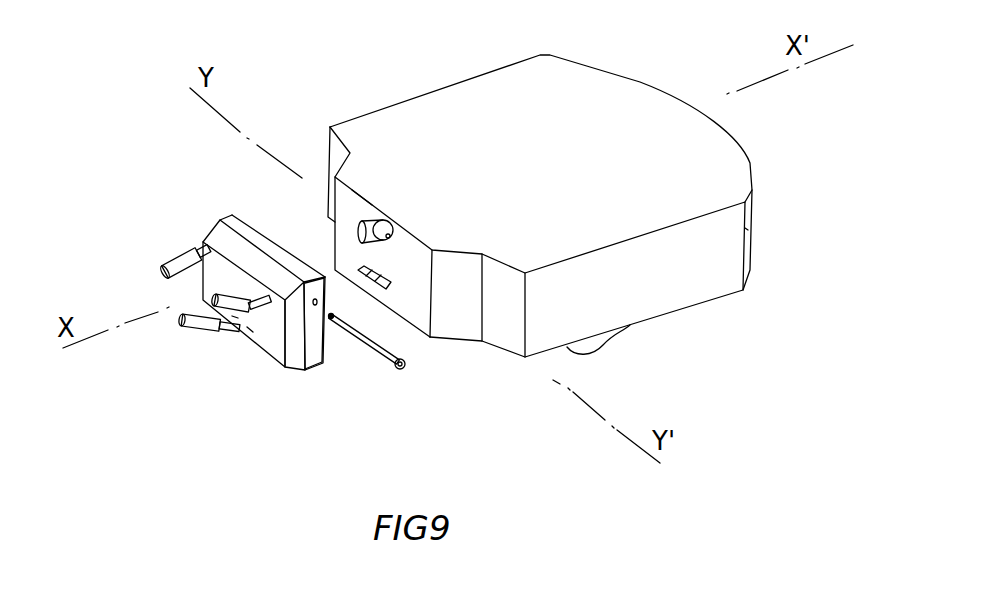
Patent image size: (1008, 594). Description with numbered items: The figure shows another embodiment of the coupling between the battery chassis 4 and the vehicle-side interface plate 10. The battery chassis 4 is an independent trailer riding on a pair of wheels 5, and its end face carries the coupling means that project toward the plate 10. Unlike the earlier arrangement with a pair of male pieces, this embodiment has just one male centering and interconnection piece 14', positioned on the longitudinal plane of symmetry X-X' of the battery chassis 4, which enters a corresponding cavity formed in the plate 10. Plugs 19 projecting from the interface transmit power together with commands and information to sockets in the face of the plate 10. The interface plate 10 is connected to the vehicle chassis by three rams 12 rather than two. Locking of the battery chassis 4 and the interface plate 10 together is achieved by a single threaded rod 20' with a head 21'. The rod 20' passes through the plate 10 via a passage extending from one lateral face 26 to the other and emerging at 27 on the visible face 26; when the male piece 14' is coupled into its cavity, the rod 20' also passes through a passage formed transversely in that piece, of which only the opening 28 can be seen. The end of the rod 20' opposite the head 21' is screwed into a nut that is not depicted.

The battery chassis 4 is at (540, 206).
The wheels 5 is at (605, 340).
The interface plate 10 is at (216, 207).
The rams 12 is at (175, 267).
The male centering and interconnection piece 14' is at (385, 176).
The plugs 19 is at (390, 287).
The threaded rod 20' is at (365, 371).
The head 21' is at (427, 397).
The lateral face 26 is at (313, 350).
The passage opening 27 is at (328, 288).
The opening 28 is at (390, 247).